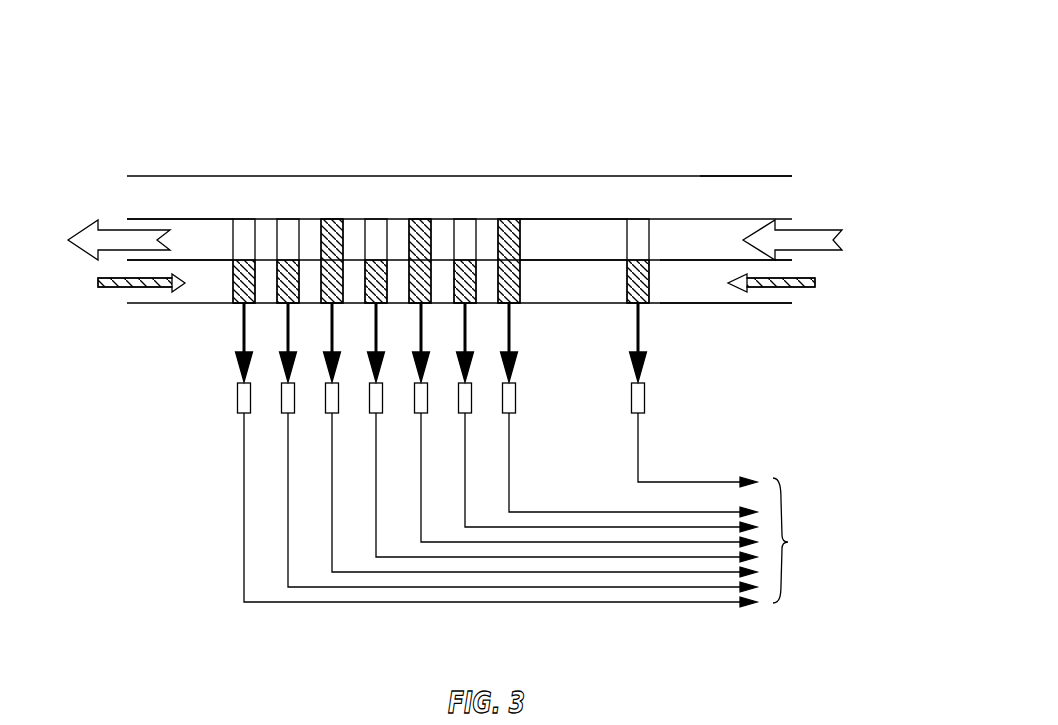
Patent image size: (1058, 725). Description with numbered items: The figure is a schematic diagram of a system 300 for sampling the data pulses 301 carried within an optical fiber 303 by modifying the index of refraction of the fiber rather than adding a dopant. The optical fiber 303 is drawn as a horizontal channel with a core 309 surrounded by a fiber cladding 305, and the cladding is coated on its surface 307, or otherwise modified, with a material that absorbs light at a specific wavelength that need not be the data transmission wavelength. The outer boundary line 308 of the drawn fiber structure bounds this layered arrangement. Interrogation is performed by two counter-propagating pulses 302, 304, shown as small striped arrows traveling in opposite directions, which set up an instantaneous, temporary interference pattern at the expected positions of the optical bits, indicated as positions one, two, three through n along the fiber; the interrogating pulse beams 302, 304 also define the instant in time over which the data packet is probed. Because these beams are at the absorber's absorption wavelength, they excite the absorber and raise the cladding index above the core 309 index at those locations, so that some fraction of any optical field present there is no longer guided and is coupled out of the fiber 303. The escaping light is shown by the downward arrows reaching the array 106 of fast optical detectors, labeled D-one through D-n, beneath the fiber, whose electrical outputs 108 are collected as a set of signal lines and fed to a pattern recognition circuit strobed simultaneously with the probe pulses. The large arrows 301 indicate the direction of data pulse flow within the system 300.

The system 300 is at (734, 46).
The pulses 301 is at (842, 245).
The interrogating pulse 302 is at (128, 288).
The optical fiber 303 is at (747, 307).
The interrogating pulse 304 is at (815, 287).
The fiber cladding 305 is at (792, 202).
The cladding surface 307 is at (540, 175).
The top plate 308 is at (753, 183).
The core 309 is at (193, 230).
The array of fast optical detectors 106 is at (325, 405).
The electrical outputs 108 is at (542, 510).